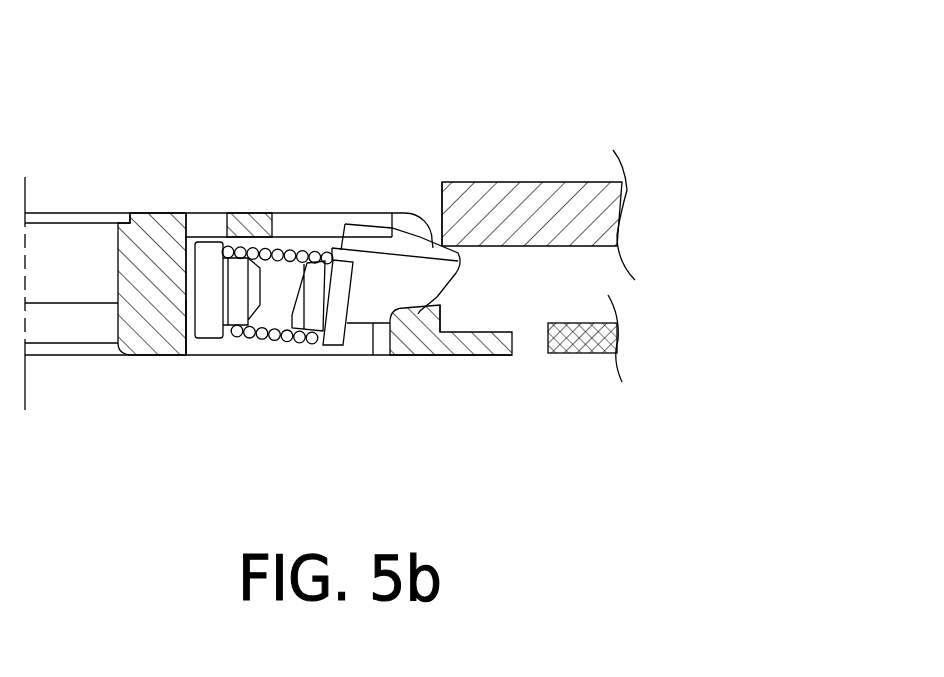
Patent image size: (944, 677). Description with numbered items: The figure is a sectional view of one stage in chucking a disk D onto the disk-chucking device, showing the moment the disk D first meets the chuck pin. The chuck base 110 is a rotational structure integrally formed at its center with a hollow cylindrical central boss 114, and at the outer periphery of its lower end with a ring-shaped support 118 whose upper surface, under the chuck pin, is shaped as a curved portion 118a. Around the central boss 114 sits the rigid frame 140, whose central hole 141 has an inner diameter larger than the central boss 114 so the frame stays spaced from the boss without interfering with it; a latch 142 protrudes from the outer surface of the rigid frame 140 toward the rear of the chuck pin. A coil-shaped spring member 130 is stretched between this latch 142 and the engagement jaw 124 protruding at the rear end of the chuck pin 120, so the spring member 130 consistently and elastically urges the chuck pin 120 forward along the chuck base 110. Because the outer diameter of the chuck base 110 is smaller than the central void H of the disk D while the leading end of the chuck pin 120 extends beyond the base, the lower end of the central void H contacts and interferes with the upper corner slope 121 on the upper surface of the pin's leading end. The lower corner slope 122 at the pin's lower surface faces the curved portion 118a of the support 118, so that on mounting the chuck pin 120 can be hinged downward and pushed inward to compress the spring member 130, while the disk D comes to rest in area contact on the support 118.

The chuck base 110 is at (157, 222).
The central boss 114 is at (128, 267).
The support 118 is at (470, 355).
The curved portion 118a is at (389, 320).
The chuck pin 120 is at (378, 273).
The upper corner slope 121 is at (427, 240).
The lower corner slope 122 is at (453, 283).
The engagement jaw 124 is at (312, 323).
The spring member 130 is at (268, 333).
The rigid frame 140 is at (212, 338).
The central hole 141 is at (180, 317).
The latch 142 is at (240, 273).
The central void H is at (448, 240).
The disk D is at (552, 190).